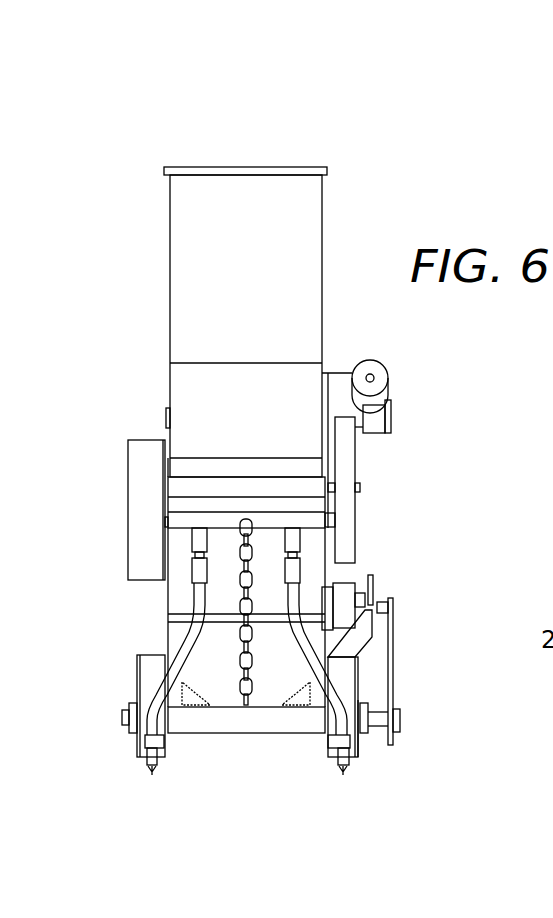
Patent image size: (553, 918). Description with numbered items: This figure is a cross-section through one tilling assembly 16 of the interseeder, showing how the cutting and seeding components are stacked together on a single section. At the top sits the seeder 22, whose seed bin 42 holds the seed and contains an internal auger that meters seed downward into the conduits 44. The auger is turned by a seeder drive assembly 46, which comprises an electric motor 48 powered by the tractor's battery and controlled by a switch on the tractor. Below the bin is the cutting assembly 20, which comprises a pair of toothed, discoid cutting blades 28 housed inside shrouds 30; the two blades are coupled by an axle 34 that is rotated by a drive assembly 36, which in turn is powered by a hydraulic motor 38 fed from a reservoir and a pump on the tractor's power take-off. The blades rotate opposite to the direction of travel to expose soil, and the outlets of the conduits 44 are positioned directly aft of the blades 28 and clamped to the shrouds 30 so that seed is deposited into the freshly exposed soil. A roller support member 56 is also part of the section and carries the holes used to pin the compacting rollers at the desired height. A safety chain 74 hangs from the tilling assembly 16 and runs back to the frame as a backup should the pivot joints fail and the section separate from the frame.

The tilling assembly 16 is at (242, 767).
The cutting assembly 20 is at (368, 758).
The seeder 22 is at (323, 156).
The cutting blade 28 is at (147, 768).
The shroud 30 is at (145, 675).
The axle 34 is at (376, 713).
The drive assembly 36 is at (397, 621).
The hydraulic motor 38 is at (347, 589).
The seed bin 42 is at (181, 234).
The conduit 44 is at (192, 633).
The seeder drive assembly 46 is at (366, 468).
The electric motor 48 is at (371, 366).
The roller support member 56 is at (184, 702).
The safety chain 74 is at (247, 577).